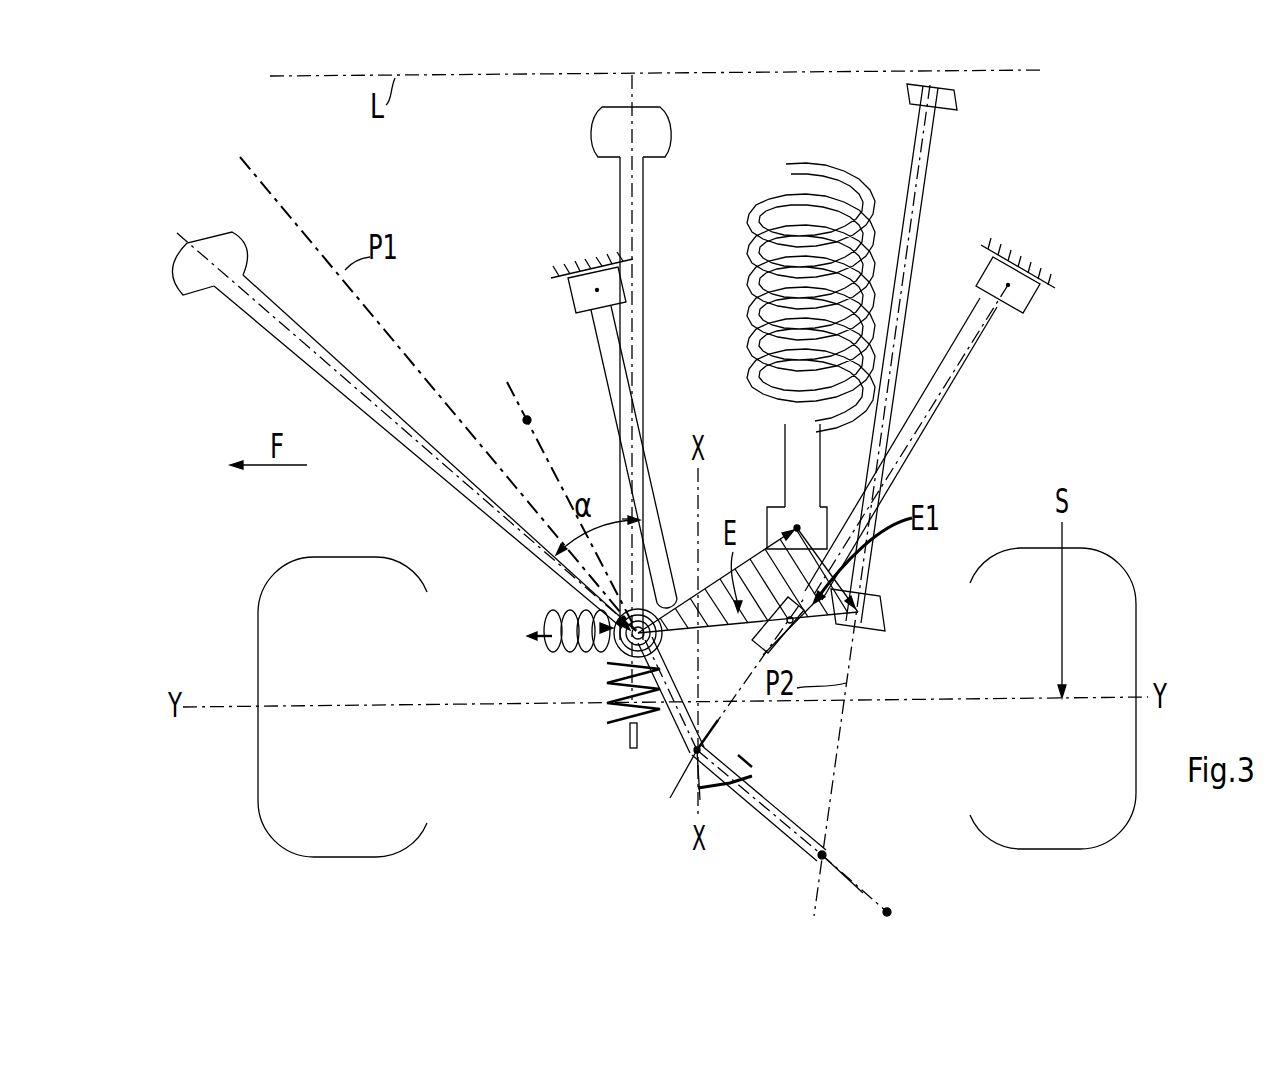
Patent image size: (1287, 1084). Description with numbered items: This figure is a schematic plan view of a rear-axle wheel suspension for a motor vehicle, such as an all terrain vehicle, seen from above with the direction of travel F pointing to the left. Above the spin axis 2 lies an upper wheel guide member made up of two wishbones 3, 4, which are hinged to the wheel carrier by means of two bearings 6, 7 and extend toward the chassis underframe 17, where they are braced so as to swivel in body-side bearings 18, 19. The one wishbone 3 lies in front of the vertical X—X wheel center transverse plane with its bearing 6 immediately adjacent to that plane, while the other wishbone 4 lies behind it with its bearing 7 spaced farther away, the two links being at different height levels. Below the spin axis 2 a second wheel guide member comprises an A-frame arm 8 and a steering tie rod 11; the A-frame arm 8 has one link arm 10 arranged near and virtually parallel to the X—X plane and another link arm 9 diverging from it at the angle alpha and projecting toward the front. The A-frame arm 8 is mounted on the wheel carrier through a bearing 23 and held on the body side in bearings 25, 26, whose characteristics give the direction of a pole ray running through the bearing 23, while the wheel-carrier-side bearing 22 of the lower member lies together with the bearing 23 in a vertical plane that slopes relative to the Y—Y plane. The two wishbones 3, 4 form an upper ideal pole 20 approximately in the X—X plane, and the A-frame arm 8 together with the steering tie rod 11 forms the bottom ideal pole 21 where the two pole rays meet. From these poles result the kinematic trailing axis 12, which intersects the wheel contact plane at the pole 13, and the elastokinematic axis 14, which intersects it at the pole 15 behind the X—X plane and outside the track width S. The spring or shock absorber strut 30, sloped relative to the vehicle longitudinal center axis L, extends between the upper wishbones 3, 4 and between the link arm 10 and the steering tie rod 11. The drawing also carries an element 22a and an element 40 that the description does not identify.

The spin axis 2 is at (731, 774).
The wishbone 3 is at (603, 325).
The wishbone 4 is at (981, 333).
The bearing 6 is at (692, 637).
The bearing 7 is at (790, 645).
The A-frame arm 8 is at (436, 500).
The link arm 9 is at (383, 410).
The link arm 10 is at (645, 230).
The steering tie rod 11 is at (922, 135).
The kinematic trailing axis 12 is at (672, 736).
The pole 13 is at (531, 417).
The elastokinematic axis 14 is at (770, 818).
The pole 15 is at (889, 911).
The chassis underframe 17 is at (550, 275).
The bearing 18 is at (606, 265).
The bearing 19 is at (1014, 278).
The upper ideal pole 20 is at (704, 752).
The bottom ideal pole 21 is at (830, 856).
The bearing 22 is at (883, 600).
The spring element 22a is at (557, 610).
The bearing 23 is at (620, 653).
The bearing 25 is at (232, 257).
The bearing 26 is at (650, 130).
The spring or shock absorber strut 30 is at (760, 285).
The spring support 40 is at (777, 510).